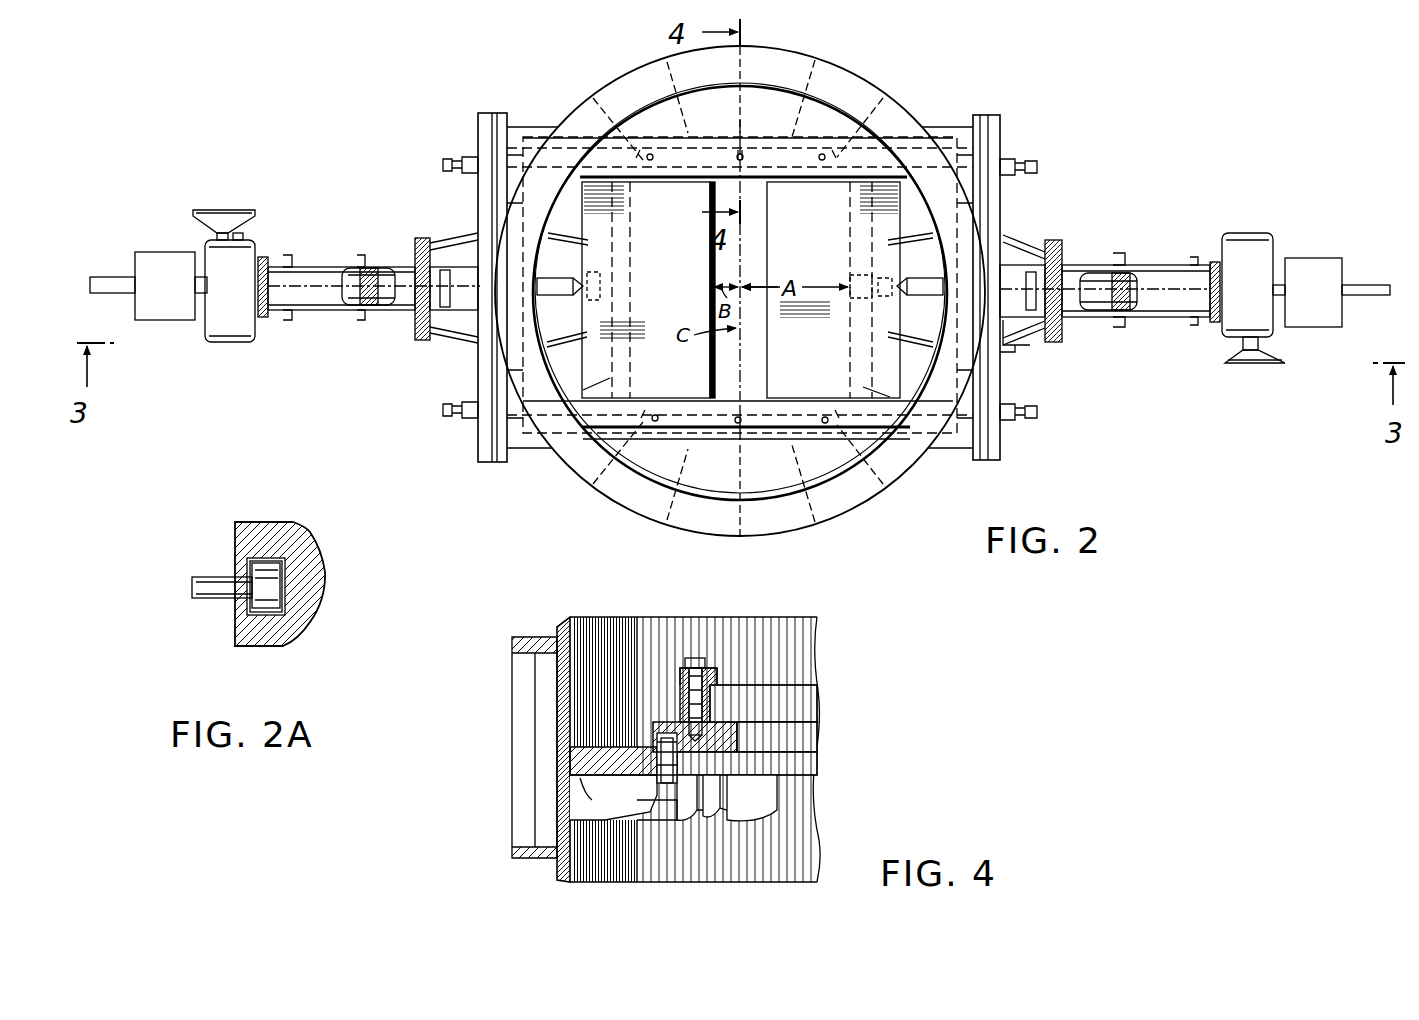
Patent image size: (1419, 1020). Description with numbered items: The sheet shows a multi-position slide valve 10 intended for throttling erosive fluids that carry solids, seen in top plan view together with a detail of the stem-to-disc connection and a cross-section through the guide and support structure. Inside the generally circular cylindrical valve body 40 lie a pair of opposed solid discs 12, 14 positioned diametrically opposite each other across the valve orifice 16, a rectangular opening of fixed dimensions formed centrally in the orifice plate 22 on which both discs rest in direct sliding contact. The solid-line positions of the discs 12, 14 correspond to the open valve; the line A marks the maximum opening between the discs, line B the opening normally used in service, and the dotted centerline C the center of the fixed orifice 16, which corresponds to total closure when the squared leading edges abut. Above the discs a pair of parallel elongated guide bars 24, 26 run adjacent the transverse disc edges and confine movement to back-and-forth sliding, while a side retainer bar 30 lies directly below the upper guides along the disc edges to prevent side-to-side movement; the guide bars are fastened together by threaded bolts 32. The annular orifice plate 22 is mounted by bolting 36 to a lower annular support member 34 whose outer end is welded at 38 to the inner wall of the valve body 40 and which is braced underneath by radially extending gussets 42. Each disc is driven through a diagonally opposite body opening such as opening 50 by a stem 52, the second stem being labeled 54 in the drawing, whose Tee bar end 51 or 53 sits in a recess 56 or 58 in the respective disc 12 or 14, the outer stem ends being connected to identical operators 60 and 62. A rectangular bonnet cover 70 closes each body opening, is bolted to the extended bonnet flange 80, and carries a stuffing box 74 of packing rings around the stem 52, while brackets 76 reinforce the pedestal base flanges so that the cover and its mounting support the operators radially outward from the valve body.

In FIG. 2, the multi-position slide valve 10 is at (1072, 98).
In FIG. 2, the disc 12 is at (646, 290).
In FIG. 2A, the disc 12 is at (313, 602).
In FIG. 2, the disc 14 is at (833, 290).
In FIG. 4, the disc 14 is at (805, 700).
In FIG. 2, the valve orifice 16 is at (754, 258).
In FIG. 2, the orifice plate 22 is at (717, 398).
In FIG. 4, the orifice plate 22 is at (805, 737).
In FIG. 2, the guide bar 24 is at (873, 420).
In FIG. 2, the guide bar 26 is at (930, 104).
In FIG. 4, the guide bar 26 is at (720, 668).
In FIG. 4, the side retainer bar 30 is at (680, 695).
In FIG. 2, the threaded bolt 32 is at (742, 155).
In FIG. 4, the threaded bolt 32 is at (700, 658).
In FIG. 4, the lower annular support member 34 is at (590, 762).
In FIG. 4, the bolting 36 is at (668, 790).
In FIG. 4, the weld 38 is at (590, 750).
In FIG. 4, the valve body 40 is at (557, 807).
In FIG. 4, the gusset 42 is at (777, 800).
In FIG. 2, the opening 50 is at (842, 472).
In FIG. 2, the Tee bar end 51 is at (582, 300).
In FIG. 2A, the Tee bar end 51 is at (274, 578).
In FIG. 2, the stem 52 is at (392, 300).
In FIG. 2A, the stem 52 is at (212, 592).
In FIG. 2, the Tee bar end 53 is at (905, 298).
In FIG. 2, the rod 54 is at (1106, 305).
In FIG. 2, the recess 56 is at (590, 272).
In FIG. 2A, the recess 56 is at (262, 563).
In FIG. 2, the recess 58 is at (892, 280).
In FIG. 2, the operator 60 is at (213, 345).
In FIG. 2, the operator 62 is at (1250, 232).
In FIG. 2, the bonnet cover 70 is at (1000, 139).
In FIG. 2, the stuffing box 74 is at (1012, 340).
In FIG. 2, the bracket 76 is at (1010, 355).
In FIG. 2, the bonnet flange 80 is at (973, 111).